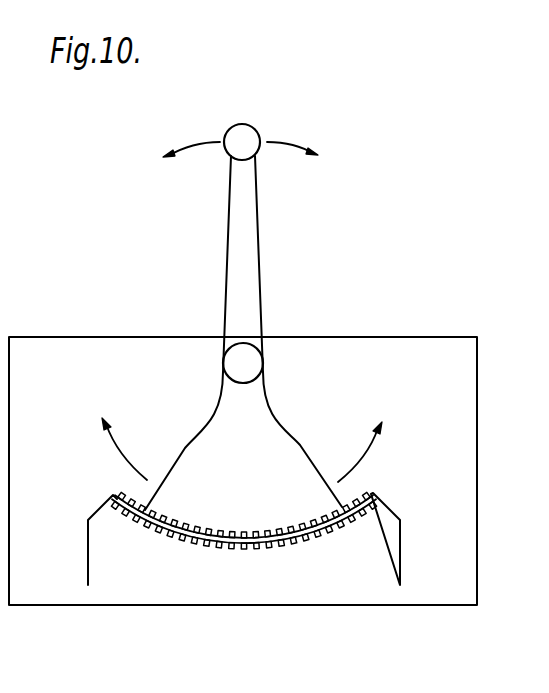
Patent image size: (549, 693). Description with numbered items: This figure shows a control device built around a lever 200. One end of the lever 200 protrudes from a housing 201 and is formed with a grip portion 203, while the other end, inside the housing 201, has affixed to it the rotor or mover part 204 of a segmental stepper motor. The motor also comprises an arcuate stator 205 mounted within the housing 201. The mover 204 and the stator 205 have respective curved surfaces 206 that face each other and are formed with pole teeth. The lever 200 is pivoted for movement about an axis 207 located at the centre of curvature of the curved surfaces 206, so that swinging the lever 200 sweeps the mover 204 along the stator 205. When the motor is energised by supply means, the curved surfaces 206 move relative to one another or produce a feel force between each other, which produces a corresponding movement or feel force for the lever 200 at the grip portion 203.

The lever 200 is at (247, 297).
The housing 201 is at (416, 337).
The grip portion 203 is at (243, 124).
The rotor or mover part 204 is at (297, 475).
The arcuate stator 205 is at (345, 572).
The curved surfaces 206 is at (217, 545).
The axis 207 is at (224, 364).